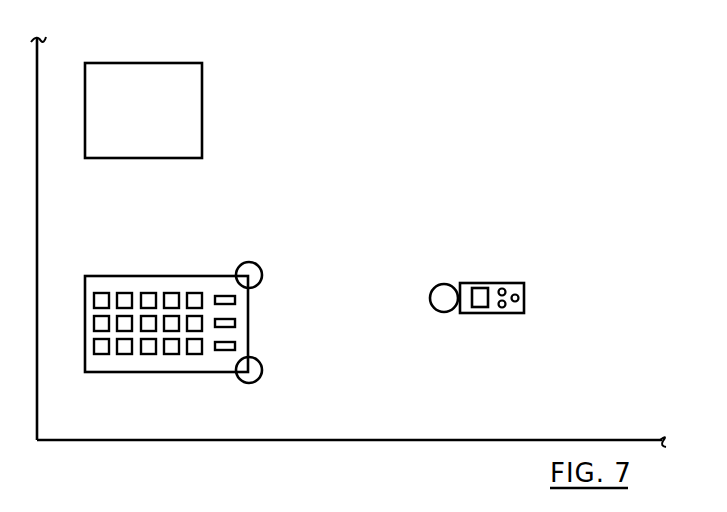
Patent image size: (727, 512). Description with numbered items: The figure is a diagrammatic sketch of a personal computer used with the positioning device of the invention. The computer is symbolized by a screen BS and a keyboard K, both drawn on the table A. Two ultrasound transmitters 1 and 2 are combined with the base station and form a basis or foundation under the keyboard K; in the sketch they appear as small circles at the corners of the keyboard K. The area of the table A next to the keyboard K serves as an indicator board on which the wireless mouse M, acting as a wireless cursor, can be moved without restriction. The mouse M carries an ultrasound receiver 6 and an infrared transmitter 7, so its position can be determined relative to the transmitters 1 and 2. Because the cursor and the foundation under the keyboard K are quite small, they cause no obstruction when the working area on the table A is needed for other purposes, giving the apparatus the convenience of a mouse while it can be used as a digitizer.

The screen BS is at (204, 118).
The keyboard K is at (153, 276).
The ultrasound transmitter 1 is at (253, 383).
The ultrasound transmitter 2 is at (258, 265).
The ultrasound receiver 6 is at (438, 286).
The infrared transmitter 7 is at (477, 284).
The wireless mouse M is at (489, 313).
The table A is at (349, 303).